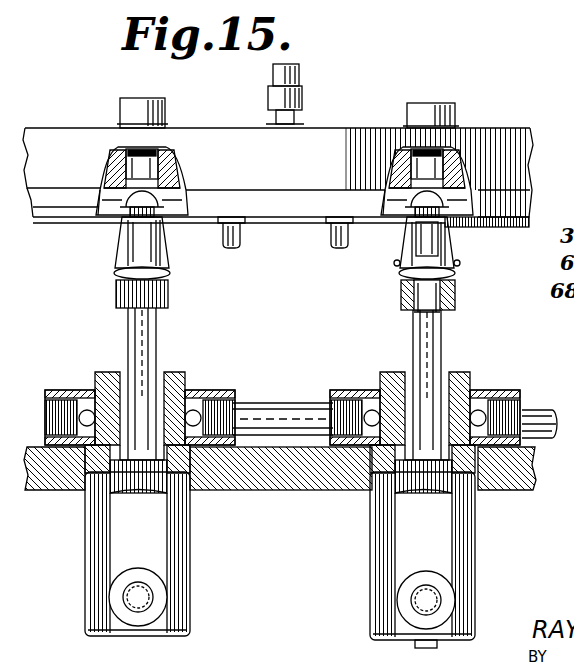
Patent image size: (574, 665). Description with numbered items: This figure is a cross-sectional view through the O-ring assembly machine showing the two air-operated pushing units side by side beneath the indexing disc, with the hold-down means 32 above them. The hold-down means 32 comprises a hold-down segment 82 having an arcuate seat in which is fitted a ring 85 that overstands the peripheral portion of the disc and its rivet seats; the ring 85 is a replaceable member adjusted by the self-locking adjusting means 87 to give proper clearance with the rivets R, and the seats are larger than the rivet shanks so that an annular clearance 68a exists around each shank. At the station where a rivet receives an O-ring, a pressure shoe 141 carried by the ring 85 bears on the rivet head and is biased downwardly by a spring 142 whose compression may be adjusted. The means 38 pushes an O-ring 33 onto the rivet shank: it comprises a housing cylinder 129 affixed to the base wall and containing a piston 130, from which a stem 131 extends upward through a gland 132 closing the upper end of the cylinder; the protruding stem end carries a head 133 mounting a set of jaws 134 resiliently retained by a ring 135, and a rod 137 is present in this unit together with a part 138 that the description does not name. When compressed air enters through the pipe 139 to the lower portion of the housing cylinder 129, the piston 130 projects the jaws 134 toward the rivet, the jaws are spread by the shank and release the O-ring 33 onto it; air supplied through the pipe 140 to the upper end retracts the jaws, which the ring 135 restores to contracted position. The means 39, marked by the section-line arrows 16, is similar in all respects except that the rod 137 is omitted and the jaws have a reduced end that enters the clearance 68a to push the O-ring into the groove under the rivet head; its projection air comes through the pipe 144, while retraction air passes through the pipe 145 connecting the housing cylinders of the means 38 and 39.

The bolt / axis line 16 is at (121, 82).
The adjusting means 87 is at (302, 78).
The hold-down segment 82 is at (238, 119).
The hold-down means 32 is at (357, 137).
The spring 142 is at (130, 162).
The pressure shoe 141 is at (168, 178).
The clearance 68a is at (162, 213).
The ring 85 is at (112, 198).
The O-rings 33 is at (335, 222).
The rivets R is at (232, 249).
The jaws 134 is at (162, 248).
The ring 135 is at (116, 270).
The head 133 is at (168, 300).
The spring ring 138 is at (452, 272).
The rod 137 is at (442, 320).
The stem 131 is at (128, 358).
The gland 132 is at (186, 374).
The pipe 145 is at (275, 407).
The pipe 140 is at (537, 410).
The O-ring seating means 39 is at (190, 550).
The O-ring pushing means 38 is at (369, 560).
The piston 130 is at (137, 468).
The housing cylinder 129 is at (95, 565).
The pipe 144 is at (152, 600).
The pipe 139 is at (412, 603).